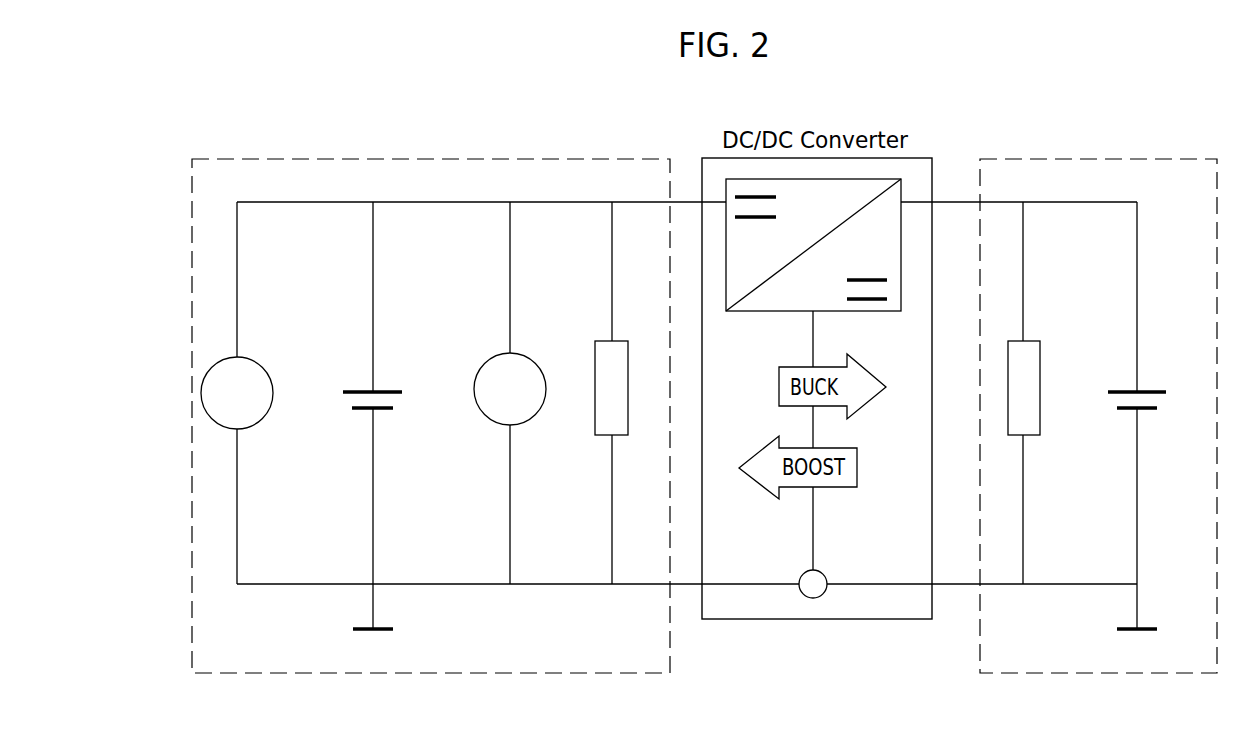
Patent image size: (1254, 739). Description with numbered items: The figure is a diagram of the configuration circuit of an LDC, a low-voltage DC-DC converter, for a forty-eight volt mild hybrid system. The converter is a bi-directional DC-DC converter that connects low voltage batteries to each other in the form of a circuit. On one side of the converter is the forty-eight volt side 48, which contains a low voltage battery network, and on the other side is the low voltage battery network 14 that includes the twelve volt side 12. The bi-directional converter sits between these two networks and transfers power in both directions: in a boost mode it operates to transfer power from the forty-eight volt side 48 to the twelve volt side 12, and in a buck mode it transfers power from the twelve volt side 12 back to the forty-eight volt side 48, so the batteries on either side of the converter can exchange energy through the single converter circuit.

The 48V battery network (BN_48V) 48 is at (502, 400).
The 14V battery network (BN_14V) 14 is at (1015, 400).
The 12V battery 12 is at (1146, 415).